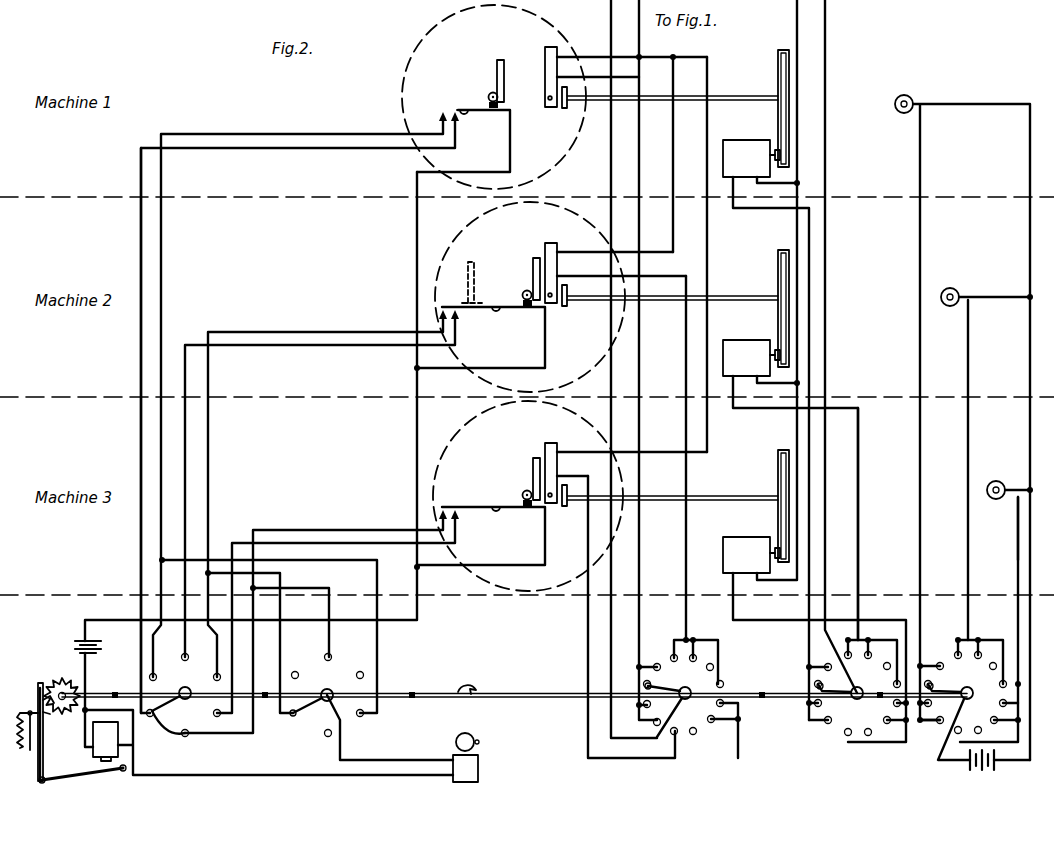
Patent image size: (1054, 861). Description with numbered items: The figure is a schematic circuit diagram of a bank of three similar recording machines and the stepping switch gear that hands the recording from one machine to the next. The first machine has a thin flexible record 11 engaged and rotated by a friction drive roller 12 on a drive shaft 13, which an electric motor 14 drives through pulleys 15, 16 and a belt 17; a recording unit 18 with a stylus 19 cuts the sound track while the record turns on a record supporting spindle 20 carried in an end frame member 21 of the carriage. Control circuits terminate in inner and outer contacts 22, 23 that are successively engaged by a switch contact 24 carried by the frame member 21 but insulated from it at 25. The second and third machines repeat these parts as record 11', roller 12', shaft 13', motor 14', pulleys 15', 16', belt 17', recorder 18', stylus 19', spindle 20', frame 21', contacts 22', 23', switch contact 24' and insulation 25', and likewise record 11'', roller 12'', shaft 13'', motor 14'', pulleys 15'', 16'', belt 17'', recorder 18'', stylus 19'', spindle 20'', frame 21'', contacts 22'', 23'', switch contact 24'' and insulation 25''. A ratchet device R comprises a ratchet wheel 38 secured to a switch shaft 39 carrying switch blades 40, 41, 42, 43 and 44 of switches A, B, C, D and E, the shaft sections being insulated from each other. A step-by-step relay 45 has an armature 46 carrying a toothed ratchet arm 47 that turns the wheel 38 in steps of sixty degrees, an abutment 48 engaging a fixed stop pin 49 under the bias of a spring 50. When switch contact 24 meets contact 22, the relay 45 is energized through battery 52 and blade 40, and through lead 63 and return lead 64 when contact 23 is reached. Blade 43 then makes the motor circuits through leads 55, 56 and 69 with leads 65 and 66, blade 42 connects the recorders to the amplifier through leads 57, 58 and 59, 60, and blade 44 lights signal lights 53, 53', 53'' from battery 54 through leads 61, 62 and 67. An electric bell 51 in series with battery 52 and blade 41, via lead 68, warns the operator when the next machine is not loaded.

The record 11 is at (494, 97).
The record 11' is at (523, 297).
The record 11'' is at (521, 496).
The friction drive roller 12 is at (556, 116).
The friction drive roller 12' is at (581, 308).
The friction drive roller 12'' is at (575, 506).
The drive shaft 13 is at (672, 81).
The drive shaft 13' is at (672, 281).
The drive shaft 13'' is at (672, 483).
The electric motor 14 is at (766, 417).
The electric motor 14' is at (790, 473).
The electric motor 14'' is at (746, 538).
The pulley 15 is at (788, 157).
The pulley 15' is at (804, 363).
The pulley 15'' is at (812, 553).
The pulley 16 is at (769, 105).
The pulley 16' is at (769, 301).
The pulley 16'' is at (770, 495).
The belt 17 is at (800, 108).
The belt 17' is at (818, 308).
The belt 17'' is at (819, 506).
The recording unit 18 is at (609, 66).
The recording unit 18' is at (603, 265).
The recording unit 18'' is at (611, 462).
The stylus 19 is at (532, 105).
The stylus 19' is at (557, 317).
The stylus 19'' is at (557, 523).
The record supporting spindle 20 is at (480, 83).
The record supporting spindle 20' is at (513, 287).
The record supporting spindle 20'' is at (508, 489).
The end frame member 21 is at (489, 68).
The end frame member 21' is at (526, 274).
The end frame member 21'' is at (520, 478).
The inner contact 22 is at (311, 412).
The inner contact 22' is at (330, 483).
The inner contact 22'' is at (355, 611).
The outer contact 23 is at (300, 390).
The outer contact 23' is at (327, 493).
The outer contact 23'' is at (325, 607).
The switch contact 24 is at (463, 125).
The switch contact 24' is at (479, 316).
The switch contact 24'' is at (479, 538).
The insulation 25 is at (492, 128).
The insulation 25' is at (527, 329).
The insulation 25'' is at (525, 528).
The ratchet wheel 38 is at (66, 678).
The switch shaft 39 is at (100, 690).
The switch blade 40 is at (165, 694).
The switch blade 41 is at (299, 721).
The switch blade 42 is at (660, 682).
The switch blade 43 is at (842, 712).
The switch blade 44 is at (944, 686).
The step-by-step relay 45 is at (93, 748).
The armature 46 is at (108, 776).
The toothed ratchet arm 47 is at (48, 716).
The abutment 48 is at (38, 700).
The fixed stop pin 49 is at (31, 741).
The spring 50 is at (17, 744).
The electric bell 51 is at (478, 768).
The battery 52 is at (80, 638).
The signal light 53 is at (950, 427).
The signal light 53' is at (984, 452).
The signal light 53'' is at (996, 599).
The battery 54 is at (996, 768).
The lead 55 is at (812, 600).
The lead 56 is at (860, 576).
The lead 57 is at (638, 630).
The lead 58 is at (684, 602).
The lead 59 is at (609, 22).
The lead 60 is at (640, 26).
The lead 61 is at (922, 600).
The lead 62 is at (970, 600).
The lead 63 is at (140, 568).
The return lead 64 is at (420, 590).
The lead 65 is at (827, 30).
The lead 66 is at (795, 18).
The lead 67 is at (1016, 556).
The lead 68 is at (368, 560).
The lead 69 is at (872, 621).
The ratchet device R is at (46, 666).
The switch A is at (212, 728).
The switch B is at (314, 722).
The switch C is at (702, 724).
The switch D is at (834, 727).
The switch E is at (940, 726).